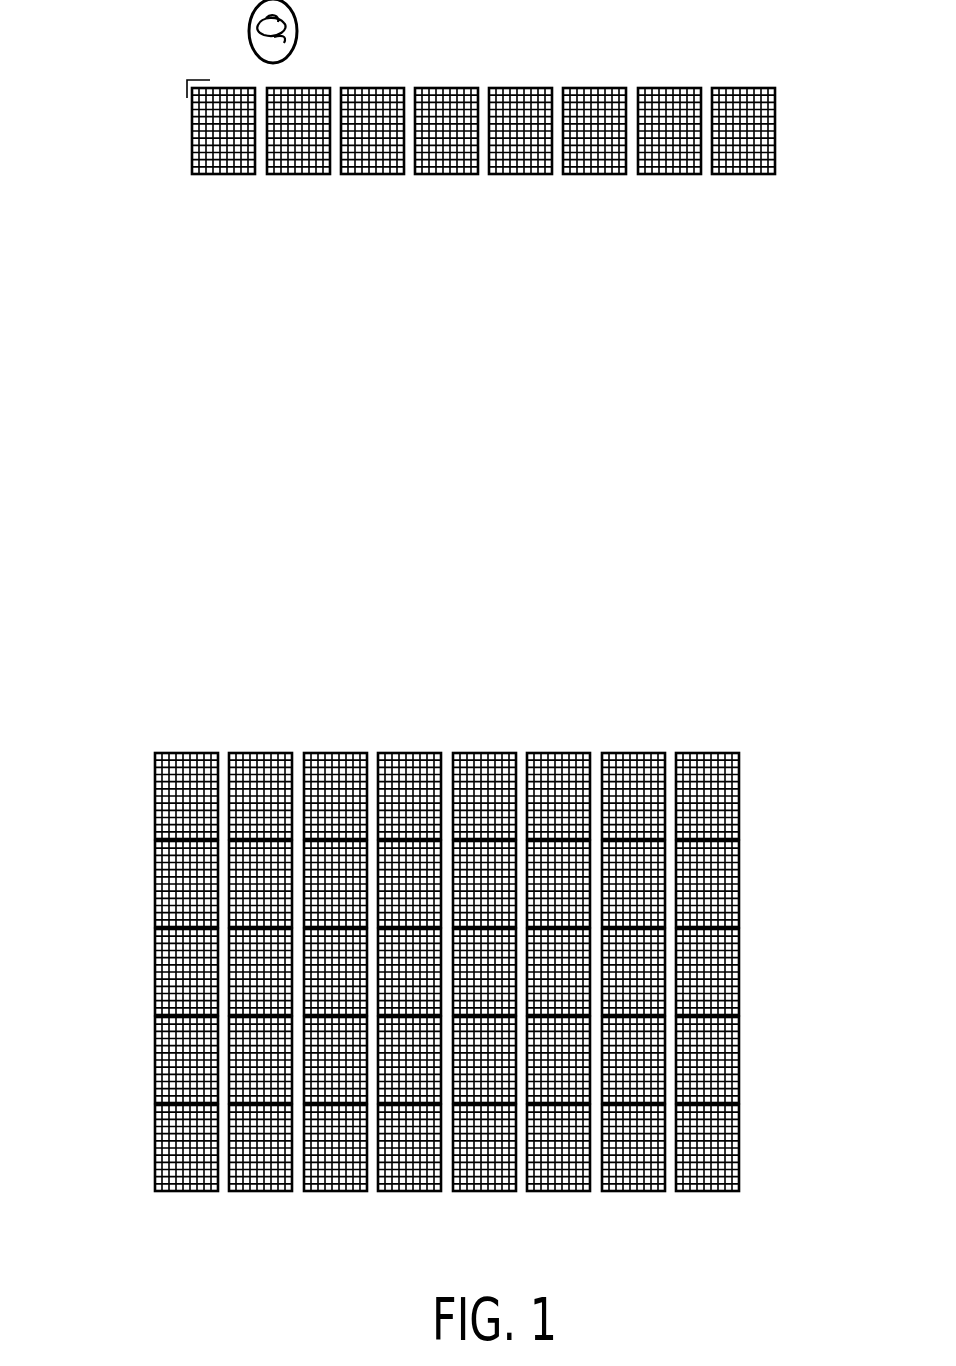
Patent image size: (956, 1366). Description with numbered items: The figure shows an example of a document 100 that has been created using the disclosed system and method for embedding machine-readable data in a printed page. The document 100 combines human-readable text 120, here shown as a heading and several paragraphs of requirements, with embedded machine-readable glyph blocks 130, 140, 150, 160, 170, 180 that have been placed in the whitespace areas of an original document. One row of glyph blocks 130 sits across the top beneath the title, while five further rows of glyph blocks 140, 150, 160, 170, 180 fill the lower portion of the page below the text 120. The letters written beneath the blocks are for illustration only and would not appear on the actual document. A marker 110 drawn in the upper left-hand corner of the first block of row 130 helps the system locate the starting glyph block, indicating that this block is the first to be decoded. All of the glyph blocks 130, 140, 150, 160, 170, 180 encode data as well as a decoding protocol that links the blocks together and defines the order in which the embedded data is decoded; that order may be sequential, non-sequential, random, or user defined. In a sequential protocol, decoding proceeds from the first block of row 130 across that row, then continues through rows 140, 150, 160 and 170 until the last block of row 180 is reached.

The document 100 is at (118, 293).
The marker 110 is at (186, 77).
The human-readable text 120 is at (799, 701).
The glyph block 130 is at (789, 92).
The glyph block 140 is at (745, 757).
The glyph block 150 is at (145, 840).
The glyph block 160 is at (745, 932).
The glyph block 170 is at (145, 1017).
The glyph block 180 is at (745, 1107).